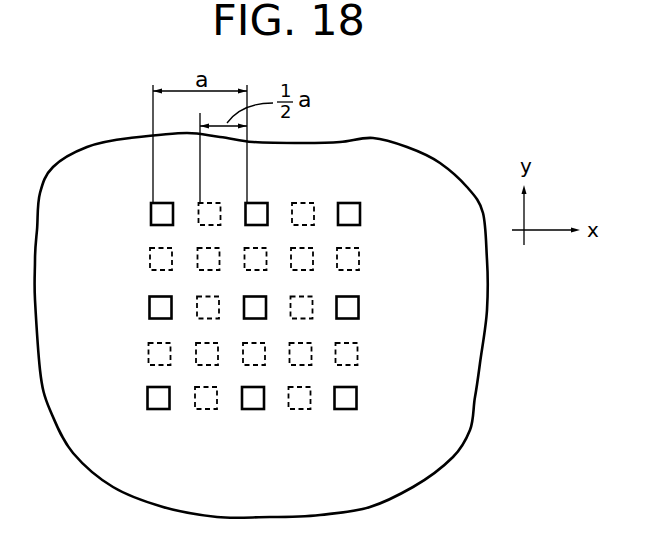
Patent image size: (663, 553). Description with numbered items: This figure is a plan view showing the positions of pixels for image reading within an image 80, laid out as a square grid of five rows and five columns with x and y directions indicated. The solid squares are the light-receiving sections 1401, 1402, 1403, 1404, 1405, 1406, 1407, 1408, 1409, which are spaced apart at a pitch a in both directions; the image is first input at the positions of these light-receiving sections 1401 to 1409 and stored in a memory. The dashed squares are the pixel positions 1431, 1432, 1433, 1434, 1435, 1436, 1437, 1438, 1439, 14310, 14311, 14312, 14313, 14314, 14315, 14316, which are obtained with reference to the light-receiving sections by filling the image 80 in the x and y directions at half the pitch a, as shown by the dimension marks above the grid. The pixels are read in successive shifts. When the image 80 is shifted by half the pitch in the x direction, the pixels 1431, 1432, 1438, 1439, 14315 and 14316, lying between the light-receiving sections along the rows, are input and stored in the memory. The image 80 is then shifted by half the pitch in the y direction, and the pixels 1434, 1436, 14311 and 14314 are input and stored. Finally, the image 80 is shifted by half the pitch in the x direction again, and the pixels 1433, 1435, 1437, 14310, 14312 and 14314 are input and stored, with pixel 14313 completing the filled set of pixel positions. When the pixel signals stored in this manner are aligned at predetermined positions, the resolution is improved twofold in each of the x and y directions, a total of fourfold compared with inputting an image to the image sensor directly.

The image 80 is at (450, 430).
The light-receiving section 1401 is at (163, 203).
The light-receiving section 1402 is at (258, 203).
The light-receiving section 1403 is at (353, 203).
The light-receiving section 1404 is at (148, 308).
The light-receiving section 1405 is at (262, 296).
The light-receiving section 1406 is at (358, 305).
The light-receiving section 1407 is at (146, 402).
The light-receiving section 1408 is at (252, 410).
The light-receiving section 1409 is at (352, 412).
The pixel 1431 is at (210, 203).
The pixel 1432 is at (305, 203).
The pixel 1433 is at (150, 263).
The pixel 1434 is at (198, 248).
The pixel 1435 is at (248, 250).
The pixel 1436 is at (303, 250).
The pixel 1437 is at (352, 260).
The pixel 1438 is at (197, 300).
The pixel 1439 is at (302, 317).
The pixel 14310 is at (147, 355).
The pixel 14311 is at (205, 362).
The pixel 14312 is at (243, 345).
The pixel 14313 is at (300, 363).
The pixel 14314 is at (352, 352).
The pixel 14315 is at (207, 409).
The pixel 14316 is at (302, 410).